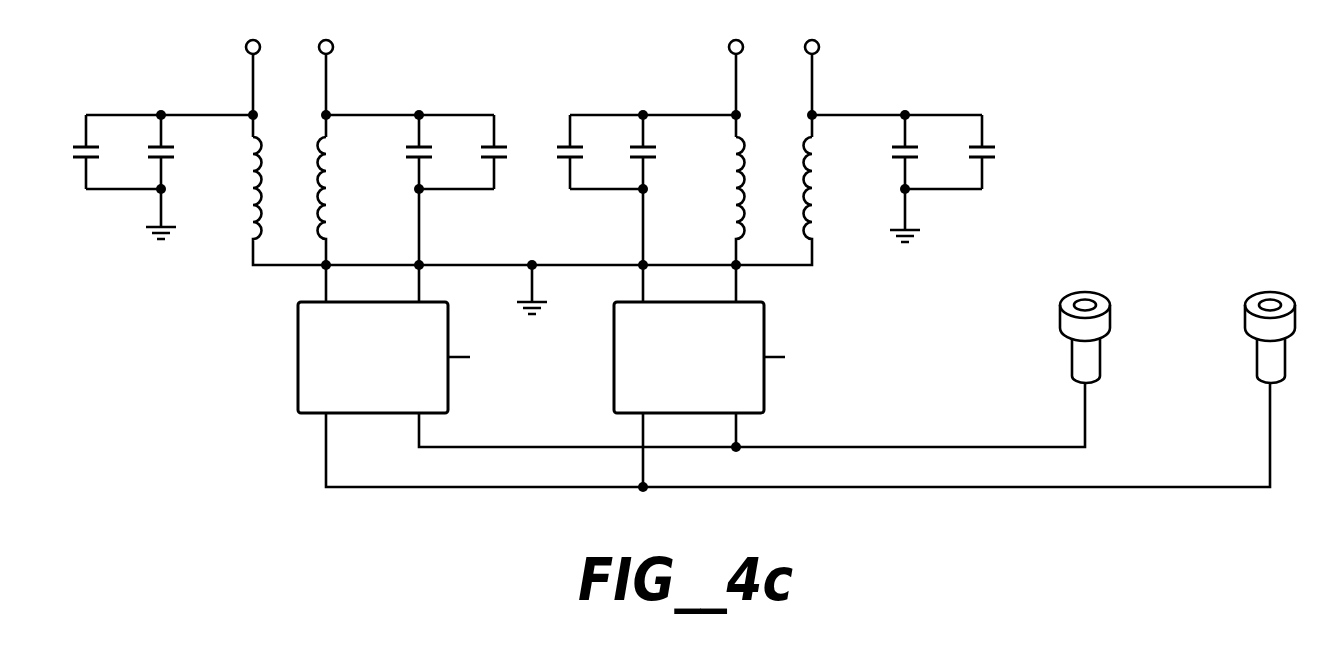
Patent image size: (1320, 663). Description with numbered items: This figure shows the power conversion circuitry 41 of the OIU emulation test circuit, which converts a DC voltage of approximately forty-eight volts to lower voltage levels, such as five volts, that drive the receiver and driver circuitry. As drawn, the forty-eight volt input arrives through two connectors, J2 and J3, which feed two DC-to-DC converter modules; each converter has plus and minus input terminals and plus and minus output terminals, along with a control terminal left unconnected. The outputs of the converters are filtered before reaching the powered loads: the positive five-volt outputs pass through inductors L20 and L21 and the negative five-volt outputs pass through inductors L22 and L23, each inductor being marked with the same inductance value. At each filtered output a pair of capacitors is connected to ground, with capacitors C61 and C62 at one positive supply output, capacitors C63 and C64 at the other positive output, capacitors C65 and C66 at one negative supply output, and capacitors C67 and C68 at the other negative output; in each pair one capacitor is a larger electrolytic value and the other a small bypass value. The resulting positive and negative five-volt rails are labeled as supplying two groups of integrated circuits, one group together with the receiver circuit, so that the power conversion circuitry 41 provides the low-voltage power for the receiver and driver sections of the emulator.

The power conversion circuitry 41 is at (188, 418).
The capacitor C61 is at (109, 152).
The capacitor C62 is at (180, 152).
The capacitor C63 is at (399, 152).
The capacitor C64 is at (471, 152).
The capacitor C65 is at (594, 152).
The capacitor C66 is at (662, 152).
The capacitor C67 is at (885, 152).
The capacitor C68 is at (959, 152).
The inductor L20 is at (254, 201).
The inductor L21 is at (354, 219).
The inductor L22 is at (709, 219).
The inductor L23 is at (804, 201).
The -48V connector J2 is at (1070, 322).
The +48V connector J3 is at (1255, 322).